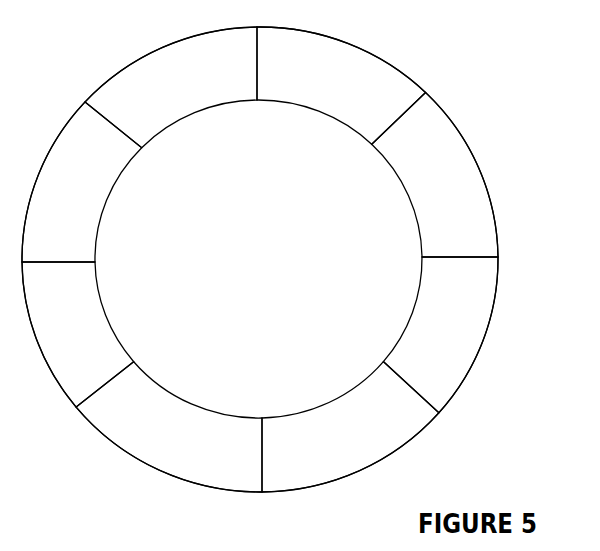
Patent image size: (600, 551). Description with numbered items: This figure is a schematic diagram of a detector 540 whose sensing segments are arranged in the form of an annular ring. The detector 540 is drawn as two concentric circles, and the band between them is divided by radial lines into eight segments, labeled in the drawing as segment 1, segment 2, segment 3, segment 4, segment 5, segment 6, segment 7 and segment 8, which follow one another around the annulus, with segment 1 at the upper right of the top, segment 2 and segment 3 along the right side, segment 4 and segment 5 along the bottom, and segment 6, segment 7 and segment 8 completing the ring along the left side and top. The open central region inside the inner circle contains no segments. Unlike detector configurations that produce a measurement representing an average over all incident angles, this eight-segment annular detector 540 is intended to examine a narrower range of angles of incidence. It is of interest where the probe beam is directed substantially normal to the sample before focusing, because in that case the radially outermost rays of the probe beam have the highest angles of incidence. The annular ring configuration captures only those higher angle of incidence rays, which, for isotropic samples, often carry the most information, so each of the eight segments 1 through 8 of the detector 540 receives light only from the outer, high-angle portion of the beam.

The detector 540 is at (488, 192).
The sector 1 is at (341, 85).
The sector 2 is at (435, 175).
The sector 3 is at (440, 335).
The sector 4 is at (350, 427).
The sector 5 is at (169, 427).
The sector 6 is at (78, 334).
The sector 7 is at (82, 182).
The sector 8 is at (171, 87).